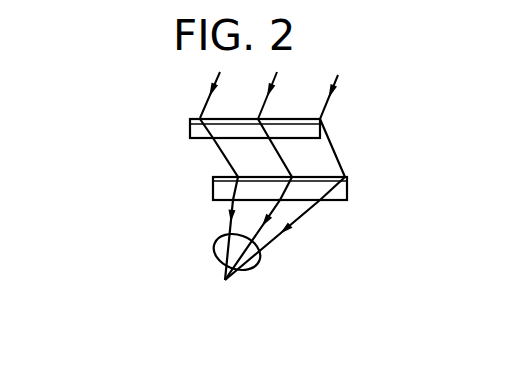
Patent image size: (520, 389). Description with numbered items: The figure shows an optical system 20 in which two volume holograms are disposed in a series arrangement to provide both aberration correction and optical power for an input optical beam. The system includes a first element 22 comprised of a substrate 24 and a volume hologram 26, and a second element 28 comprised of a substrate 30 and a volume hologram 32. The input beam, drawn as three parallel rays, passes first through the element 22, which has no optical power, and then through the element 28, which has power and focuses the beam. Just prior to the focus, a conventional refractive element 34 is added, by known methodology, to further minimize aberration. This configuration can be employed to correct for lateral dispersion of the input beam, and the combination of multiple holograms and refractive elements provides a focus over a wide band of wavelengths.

The optical system 20 is at (108, 184).
The first element 22 is at (347, 128).
The substrate 24 is at (190, 133).
The volume hologram 26 is at (190, 120).
The second element 28 is at (365, 186).
The substrate 30 is at (215, 196).
The volume hologram 32 is at (213, 178).
The conventional refractive element 34 is at (262, 260).